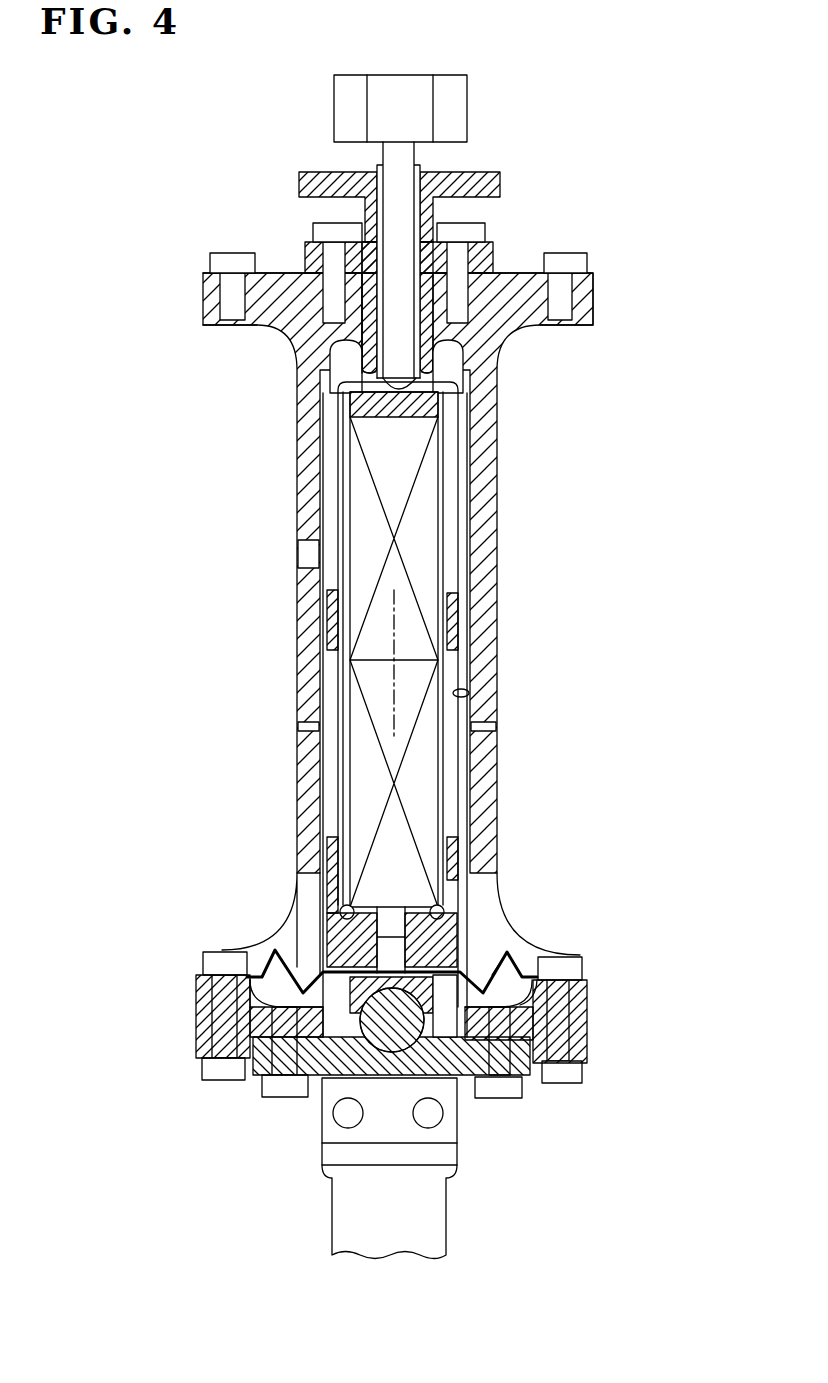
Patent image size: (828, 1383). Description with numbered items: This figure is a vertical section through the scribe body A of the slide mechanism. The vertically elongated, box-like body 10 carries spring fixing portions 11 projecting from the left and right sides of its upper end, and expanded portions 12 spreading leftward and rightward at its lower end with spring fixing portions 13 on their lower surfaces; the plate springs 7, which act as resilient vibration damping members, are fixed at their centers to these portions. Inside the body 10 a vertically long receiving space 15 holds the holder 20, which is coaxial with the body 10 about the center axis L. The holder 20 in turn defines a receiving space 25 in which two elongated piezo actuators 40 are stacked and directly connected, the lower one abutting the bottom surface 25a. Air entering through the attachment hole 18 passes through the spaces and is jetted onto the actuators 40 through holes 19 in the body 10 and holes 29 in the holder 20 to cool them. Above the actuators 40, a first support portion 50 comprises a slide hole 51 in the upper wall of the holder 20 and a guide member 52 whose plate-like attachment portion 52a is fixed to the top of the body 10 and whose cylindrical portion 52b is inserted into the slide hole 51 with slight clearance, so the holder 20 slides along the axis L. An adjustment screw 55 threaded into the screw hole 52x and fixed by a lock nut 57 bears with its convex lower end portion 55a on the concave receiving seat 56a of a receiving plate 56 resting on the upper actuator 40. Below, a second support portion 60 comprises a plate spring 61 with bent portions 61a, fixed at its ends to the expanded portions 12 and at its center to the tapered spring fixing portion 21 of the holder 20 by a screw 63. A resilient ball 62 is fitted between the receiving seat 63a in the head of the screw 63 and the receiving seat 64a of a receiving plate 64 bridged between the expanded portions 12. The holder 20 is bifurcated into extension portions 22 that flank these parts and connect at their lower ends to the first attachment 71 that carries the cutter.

The plate spring 7 is at (207, 272).
The body 10 is at (502, 453).
The spring fixing portion 11 is at (203, 290).
The expanded portion 12 is at (197, 1018).
The spring fixing portion 13 is at (252, 1040).
The receiving space 15 is at (469, 693).
The attachment hole 18 is at (308, 550).
The hole 19 is at (300, 733).
The holder 20 is at (465, 618).
The spring fixing portion 21 is at (347, 967).
The extension portion 22 is at (438, 1025).
The receiving space 25 is at (330, 607).
The bottom surface 25a is at (417, 895).
The hole 29 is at (337, 433).
The piezo actuator 40 is at (418, 532).
The first support portion 50 is at (357, 305).
The slide hole 51 is at (432, 377).
The guide member 52 is at (487, 245).
The attachment portion 52a is at (347, 302).
The cylindrical portion 52b is at (420, 332).
The screw hole 52x is at (425, 240).
The adjustment screw 55 is at (390, 192).
The lower end portion 55a is at (380, 387).
The receiving plate 56 is at (390, 417).
The receiving seat 56a is at (423, 392).
The lock nut 57 is at (498, 183).
The second support portion 60 is at (548, 957).
The plate spring 61 is at (453, 967).
The bent portion 61a is at (270, 960).
The ball 62 is at (400, 1043).
The screw 63 is at (367, 965).
The receiving seat 63a is at (247, 1000).
The receiving plate 64 is at (467, 1067).
The receiving seat 64a is at (352, 1007).
The first attachment 71 is at (378, 1235).
The scribe body A is at (508, 582).
The center axis L is at (394, 675).